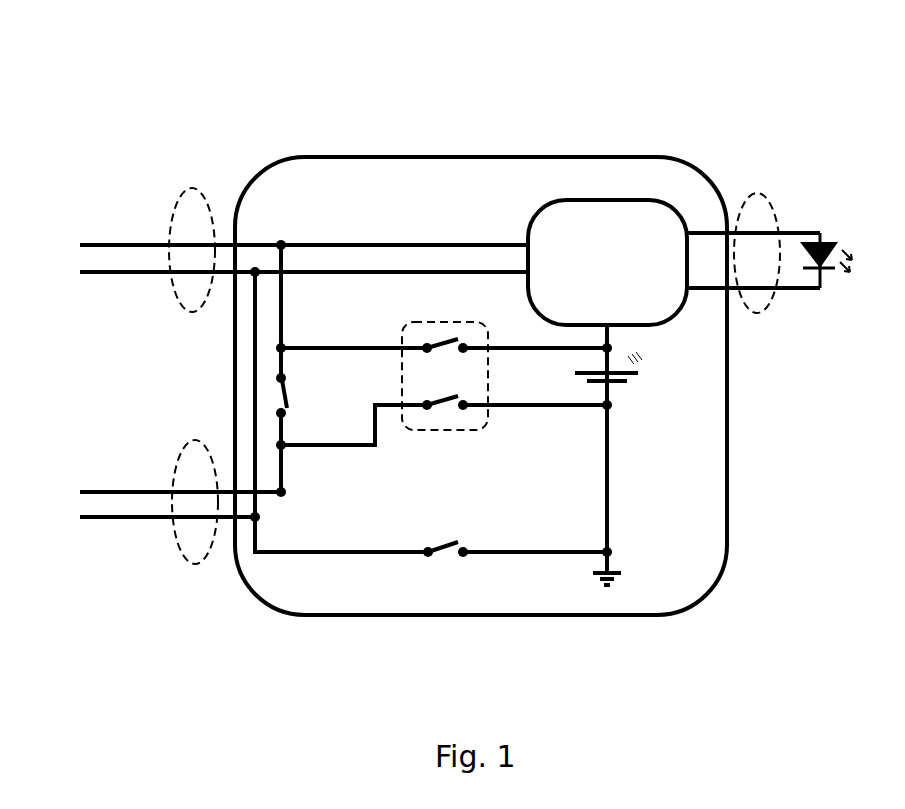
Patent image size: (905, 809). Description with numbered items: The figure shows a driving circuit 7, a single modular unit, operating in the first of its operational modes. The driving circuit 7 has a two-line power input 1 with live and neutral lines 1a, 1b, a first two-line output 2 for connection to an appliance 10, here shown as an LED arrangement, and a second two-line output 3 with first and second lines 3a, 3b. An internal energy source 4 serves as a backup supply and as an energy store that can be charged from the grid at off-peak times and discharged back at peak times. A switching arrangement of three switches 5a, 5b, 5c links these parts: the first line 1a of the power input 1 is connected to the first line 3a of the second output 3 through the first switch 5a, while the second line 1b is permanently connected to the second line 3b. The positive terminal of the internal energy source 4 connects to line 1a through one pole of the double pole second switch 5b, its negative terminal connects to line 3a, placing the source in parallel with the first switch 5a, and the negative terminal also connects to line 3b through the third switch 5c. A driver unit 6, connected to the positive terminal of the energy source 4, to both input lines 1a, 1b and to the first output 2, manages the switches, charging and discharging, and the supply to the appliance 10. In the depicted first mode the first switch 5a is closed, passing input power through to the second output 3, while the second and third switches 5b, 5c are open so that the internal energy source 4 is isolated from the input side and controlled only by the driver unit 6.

The two-line power input 1 is at (192, 190).
The first line of the two-line power input 1a is at (110, 242).
The second line of the two-line power input 1b is at (110, 275).
The first two-line output 2 is at (757, 193).
The second two-line output 3 is at (195, 563).
The first line of the second two-line output 3a is at (112, 490).
The second line of the second two-line output 3b is at (112, 520).
The internal energy source 4 is at (632, 373).
The first switch 5a is at (272, 397).
The second switch 5b is at (490, 413).
The third switch 5c is at (443, 556).
The driver unit 6 is at (607, 274).
The driving circuit 7 is at (467, 157).
The appliance 10 is at (830, 282).